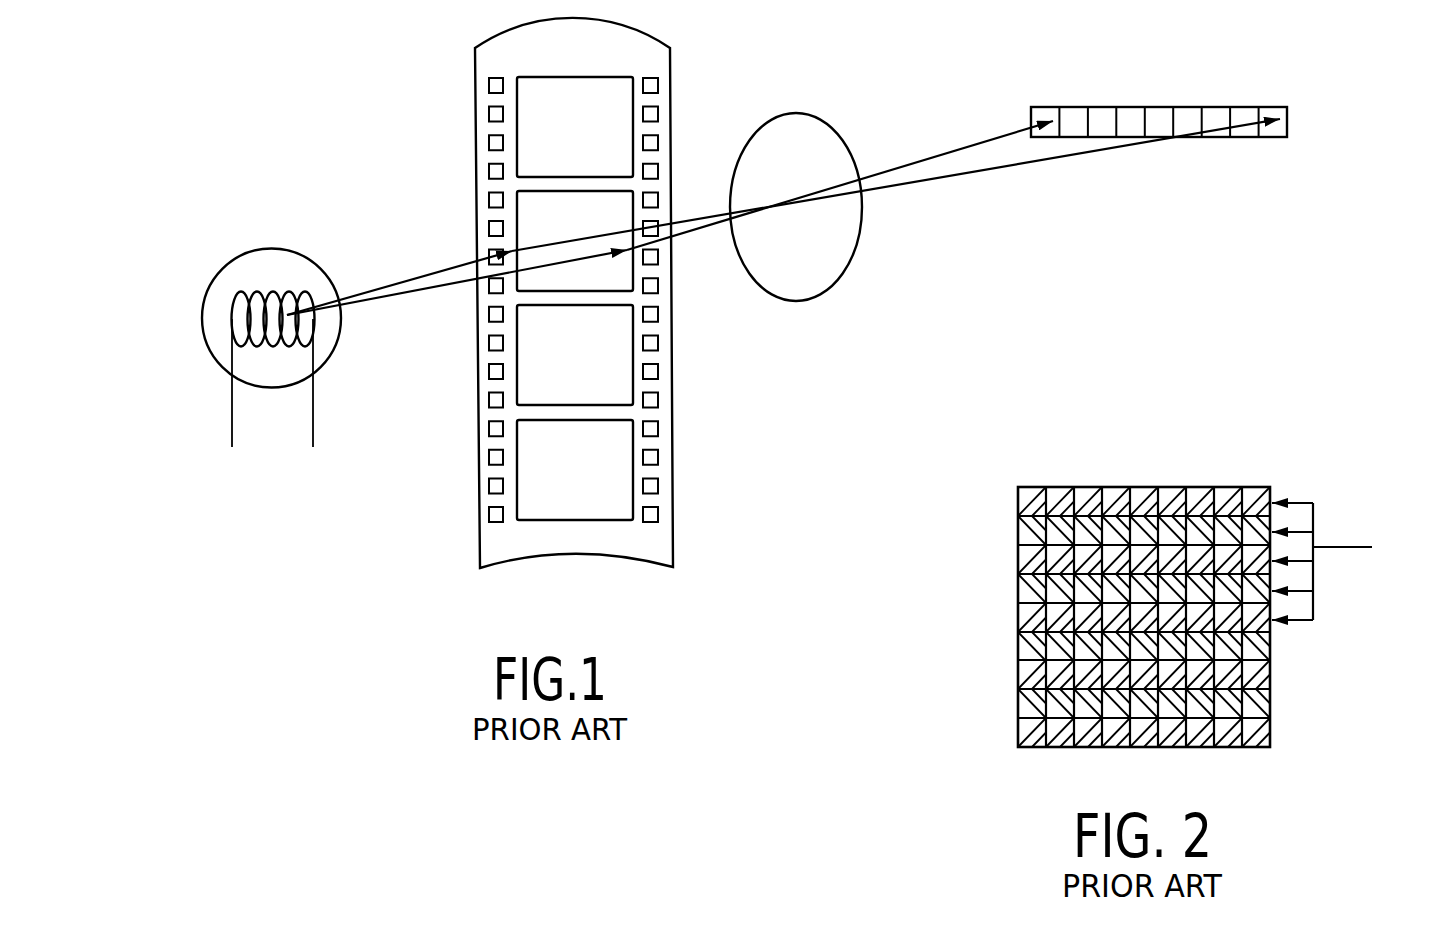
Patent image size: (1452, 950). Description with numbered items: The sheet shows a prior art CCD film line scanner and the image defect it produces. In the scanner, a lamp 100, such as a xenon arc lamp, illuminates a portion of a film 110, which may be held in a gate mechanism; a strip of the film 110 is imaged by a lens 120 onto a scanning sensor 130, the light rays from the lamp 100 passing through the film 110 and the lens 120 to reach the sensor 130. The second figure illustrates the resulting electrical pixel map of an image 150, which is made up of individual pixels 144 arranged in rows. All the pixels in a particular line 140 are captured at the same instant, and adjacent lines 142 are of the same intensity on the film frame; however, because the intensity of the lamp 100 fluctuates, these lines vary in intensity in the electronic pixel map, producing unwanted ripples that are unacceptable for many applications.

In FIG. 1, the lamp 100 is at (202, 318).
In FIG. 1, the film 110 is at (475, 490).
In FIG. 1, the lens 120 is at (862, 246).
In FIG. 1, the scanning sensor 130 is at (1263, 138).
In FIG. 2, the line 140 is at (1350, 561).
In FIG. 2, the adjacent lines 142 is at (1018, 527).
In FIG. 2, the pixels 144 is at (1190, 627).
In FIG. 2, the image 150 is at (1272, 740).